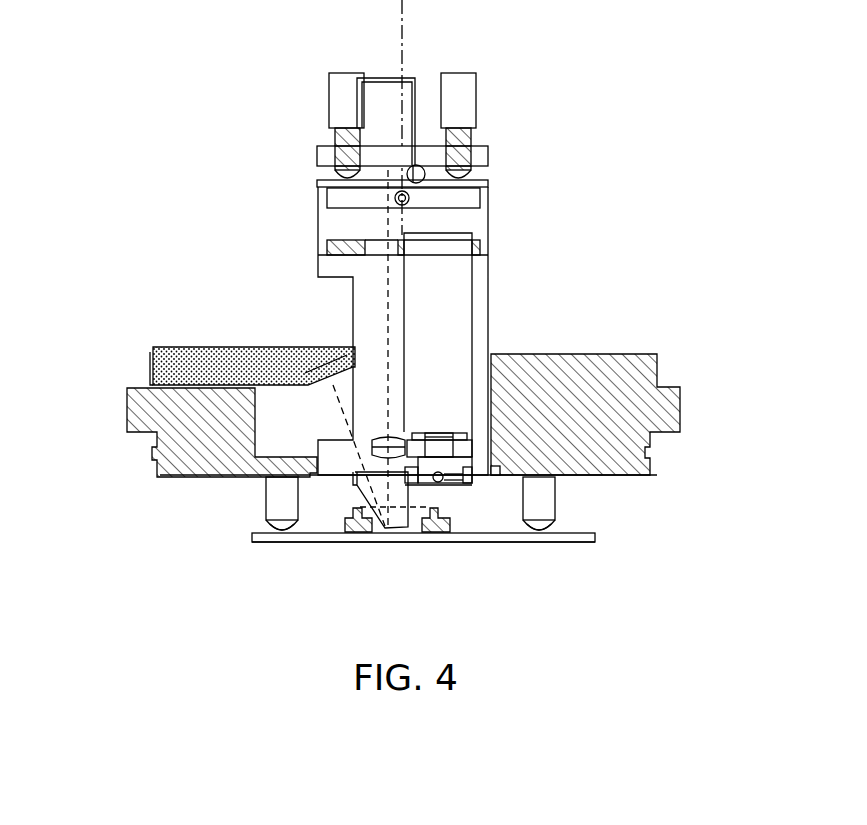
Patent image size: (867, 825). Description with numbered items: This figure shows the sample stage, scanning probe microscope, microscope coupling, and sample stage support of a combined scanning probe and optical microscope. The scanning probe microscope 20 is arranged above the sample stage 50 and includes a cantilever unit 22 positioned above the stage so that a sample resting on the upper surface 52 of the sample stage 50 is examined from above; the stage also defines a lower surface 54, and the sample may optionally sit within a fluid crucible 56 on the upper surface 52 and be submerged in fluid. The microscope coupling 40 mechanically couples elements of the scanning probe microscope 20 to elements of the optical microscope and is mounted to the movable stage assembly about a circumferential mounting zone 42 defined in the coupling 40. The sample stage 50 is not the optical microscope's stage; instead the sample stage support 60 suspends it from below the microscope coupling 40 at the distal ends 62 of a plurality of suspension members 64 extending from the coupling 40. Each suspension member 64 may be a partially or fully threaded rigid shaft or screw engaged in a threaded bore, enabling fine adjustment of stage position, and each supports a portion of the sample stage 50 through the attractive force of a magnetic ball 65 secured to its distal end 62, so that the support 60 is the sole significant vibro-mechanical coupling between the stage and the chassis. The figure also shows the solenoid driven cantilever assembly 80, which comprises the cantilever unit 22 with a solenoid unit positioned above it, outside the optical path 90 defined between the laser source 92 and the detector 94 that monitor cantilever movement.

The scanning probe microscope 20 is at (600, 180).
The cantilever unit 22 is at (395, 548).
The microscope coupling 40 is at (578, 353).
The circumferential mounting zone 42 is at (128, 452).
The sample stage 50 is at (568, 542).
The upper surface 52 is at (328, 531).
The lower surface 54 is at (262, 543).
The fluid crucible 56 is at (442, 531).
The sample stage support 60 is at (657, 540).
The distal ends 62 is at (262, 493).
The suspension members 64 is at (240, 522).
The magnetic ball 65 is at (284, 530).
The solenoid driven cantilever assembly 80 is at (437, 418).
The optical path 90 is at (390, 302).
The laser source 92 is at (416, 88).
The detector 94 is at (319, 350).